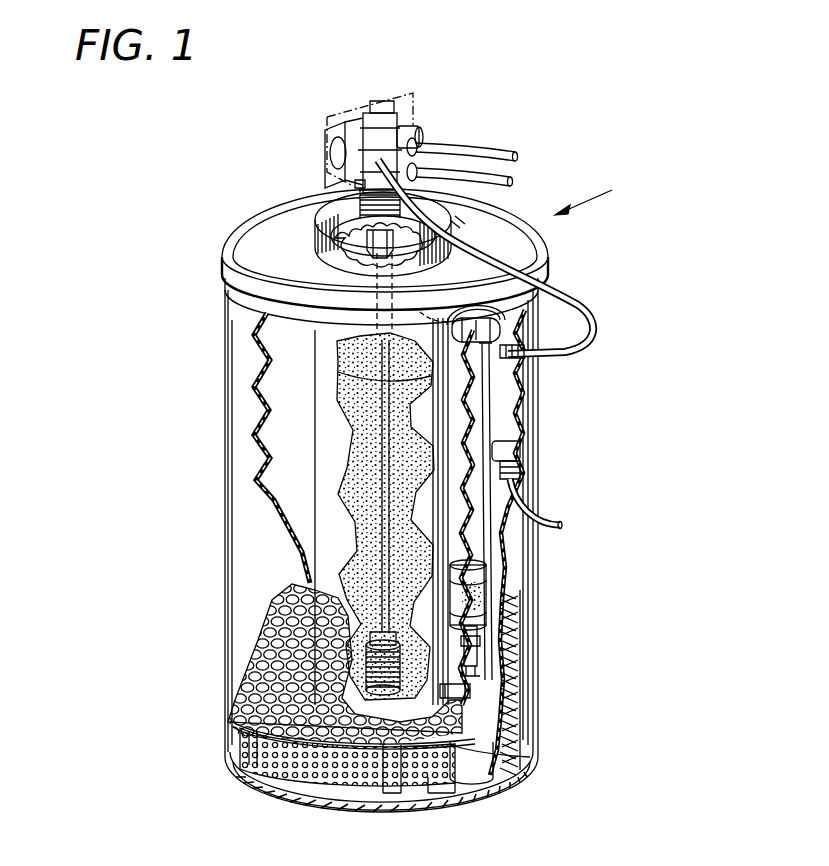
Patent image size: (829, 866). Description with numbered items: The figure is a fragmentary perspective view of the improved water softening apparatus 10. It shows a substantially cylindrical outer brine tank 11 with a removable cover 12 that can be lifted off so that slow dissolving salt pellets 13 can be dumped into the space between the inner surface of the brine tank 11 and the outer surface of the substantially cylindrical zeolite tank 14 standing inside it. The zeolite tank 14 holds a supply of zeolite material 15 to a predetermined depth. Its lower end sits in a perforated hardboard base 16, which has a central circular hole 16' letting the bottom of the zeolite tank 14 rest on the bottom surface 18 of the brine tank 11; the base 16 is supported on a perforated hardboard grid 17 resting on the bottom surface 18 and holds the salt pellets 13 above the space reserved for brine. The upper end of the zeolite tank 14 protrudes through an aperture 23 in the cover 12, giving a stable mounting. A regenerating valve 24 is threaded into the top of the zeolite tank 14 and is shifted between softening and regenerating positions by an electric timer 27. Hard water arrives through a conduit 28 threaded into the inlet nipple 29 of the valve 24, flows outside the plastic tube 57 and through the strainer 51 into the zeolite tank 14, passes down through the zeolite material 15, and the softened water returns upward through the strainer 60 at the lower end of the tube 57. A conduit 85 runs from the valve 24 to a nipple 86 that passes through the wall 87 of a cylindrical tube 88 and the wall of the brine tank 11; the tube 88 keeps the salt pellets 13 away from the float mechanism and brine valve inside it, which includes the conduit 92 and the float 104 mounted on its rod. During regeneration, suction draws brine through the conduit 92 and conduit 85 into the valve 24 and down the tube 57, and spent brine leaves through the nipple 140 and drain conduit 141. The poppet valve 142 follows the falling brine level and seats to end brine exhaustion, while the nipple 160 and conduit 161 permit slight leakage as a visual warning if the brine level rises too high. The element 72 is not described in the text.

The water softening apparatus 10 is at (599, 194).
The outer brine tank 11 is at (540, 640).
The removable cover 12 is at (246, 238).
The salt pellets 13 is at (276, 616).
The zeolite tank 14 is at (313, 448).
The zeolite material 15 is at (346, 410).
The perforated hardboard base 16 is at (356, 732).
The circular hole 16' is at (438, 668).
The perforated hardboard grid 17 is at (352, 766).
The bottom surface 18 is at (362, 800).
The aperture 23 is at (323, 262).
The regenerating valve 24 is at (345, 160).
The electric timer 27 is at (345, 115).
The conduit 28 is at (495, 150).
The inlet nipple 29 is at (416, 131).
The strainer 51 is at (358, 205).
The plastic tube 57 is at (376, 254).
The strainer 60 is at (350, 590).
The second tube 72 is at (512, 178).
The conduit 85 is at (470, 254).
The nipple 86 is at (522, 344).
The wall 87 is at (488, 314).
The cylindrical tube 88 is at (468, 301).
The conduit 92 is at (490, 426).
The float 104 is at (485, 600).
The nipple 140 is at (350, 186).
The conduit 141 is at (457, 215).
The poppet valve 142 is at (478, 640).
The nipple 160 is at (516, 459).
The conduit 161 is at (546, 521).